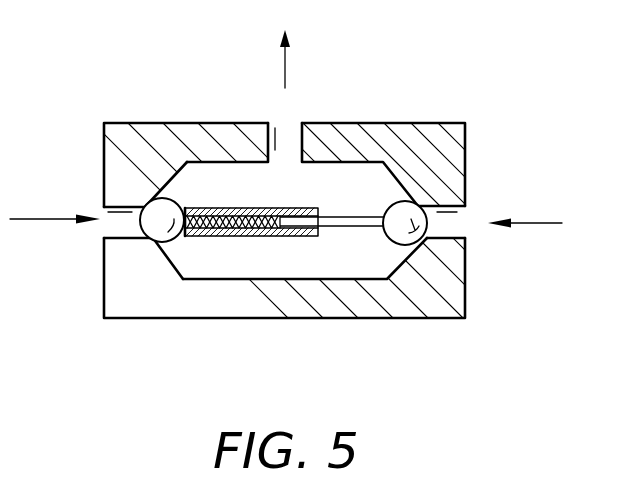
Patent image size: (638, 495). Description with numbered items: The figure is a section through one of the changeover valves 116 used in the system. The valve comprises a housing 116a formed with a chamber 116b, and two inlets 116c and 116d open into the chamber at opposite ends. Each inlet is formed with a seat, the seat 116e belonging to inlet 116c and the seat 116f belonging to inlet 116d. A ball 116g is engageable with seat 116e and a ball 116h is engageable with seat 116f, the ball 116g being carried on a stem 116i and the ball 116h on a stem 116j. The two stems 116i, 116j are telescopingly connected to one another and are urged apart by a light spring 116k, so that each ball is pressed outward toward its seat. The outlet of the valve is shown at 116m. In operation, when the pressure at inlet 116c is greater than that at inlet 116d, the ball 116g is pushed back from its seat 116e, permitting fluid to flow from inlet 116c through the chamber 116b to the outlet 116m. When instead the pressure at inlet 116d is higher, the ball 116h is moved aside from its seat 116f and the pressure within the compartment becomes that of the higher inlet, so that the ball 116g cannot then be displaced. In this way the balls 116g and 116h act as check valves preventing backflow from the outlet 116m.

The changeover valve 116 is at (353, 113).
The housing 116a is at (466, 295).
The chamber 116b is at (345, 262).
The inlet 116c is at (116, 227).
The inlet 116d is at (453, 223).
The seat 116e is at (175, 245).
The seat 116f is at (393, 197).
The ball 116g is at (160, 205).
The ball 116h is at (478, 229).
The stem 116i is at (284, 133).
The stem 116j is at (348, 217).
The light spring 116k is at (234, 236).
The outlet 116m is at (206, 209).